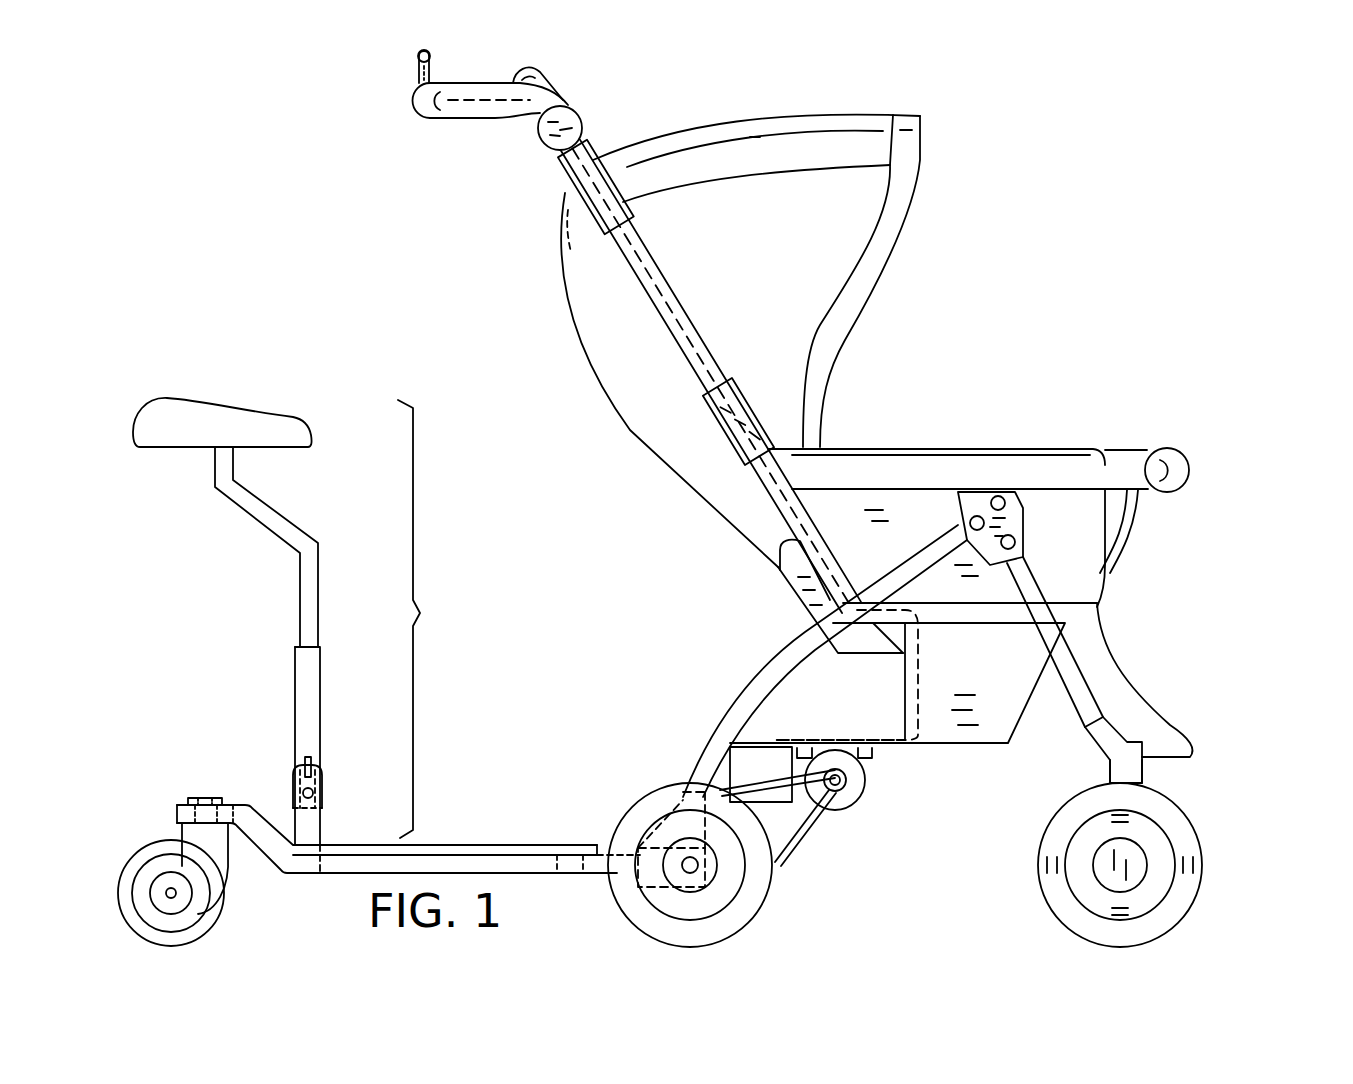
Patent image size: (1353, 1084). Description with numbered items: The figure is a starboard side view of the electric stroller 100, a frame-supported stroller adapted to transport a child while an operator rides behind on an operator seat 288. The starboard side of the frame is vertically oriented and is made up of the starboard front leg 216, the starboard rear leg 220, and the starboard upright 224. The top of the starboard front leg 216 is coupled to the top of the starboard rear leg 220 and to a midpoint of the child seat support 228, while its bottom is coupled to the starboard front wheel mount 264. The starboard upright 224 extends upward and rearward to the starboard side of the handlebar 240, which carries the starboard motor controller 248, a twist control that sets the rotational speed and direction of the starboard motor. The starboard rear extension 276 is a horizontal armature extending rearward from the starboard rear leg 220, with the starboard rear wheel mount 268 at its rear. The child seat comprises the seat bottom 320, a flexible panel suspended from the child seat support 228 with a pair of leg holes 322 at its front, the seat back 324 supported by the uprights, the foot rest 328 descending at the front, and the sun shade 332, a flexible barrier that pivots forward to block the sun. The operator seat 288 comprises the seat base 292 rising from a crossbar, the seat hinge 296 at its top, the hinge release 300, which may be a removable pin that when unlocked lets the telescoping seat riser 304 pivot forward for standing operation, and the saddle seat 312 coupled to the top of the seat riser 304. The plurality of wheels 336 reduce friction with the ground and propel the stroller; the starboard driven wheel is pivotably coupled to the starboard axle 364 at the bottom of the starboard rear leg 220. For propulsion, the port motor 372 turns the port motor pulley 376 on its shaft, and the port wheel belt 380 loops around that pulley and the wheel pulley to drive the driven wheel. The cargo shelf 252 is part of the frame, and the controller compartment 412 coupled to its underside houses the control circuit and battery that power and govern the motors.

The electric stroller 100 is at (1103, 225).
The starboard front leg 216 is at (1062, 670).
The starboard rear leg 220 is at (752, 690).
The starboard upright 224 is at (670, 322).
The child seat support 228 is at (1125, 463).
The handlebar 240 is at (453, 118).
The starboard motor controller 248 is at (417, 77).
The cargo shelf 252 is at (803, 647).
The starboard front wheel mount 264 is at (1138, 772).
The starboard rear wheel mount 268 is at (180, 815).
The starboard rear extension 276 is at (544, 873).
The operator seat 288 is at (443, 619).
The seat base 292 is at (293, 803).
The seat hinge 296 is at (299, 770).
The hinge release 300 is at (312, 793).
The seat riser 304 is at (303, 612).
The saddle seat 312 is at (168, 415).
The seat bottom 320 is at (1067, 603).
The leg holes 322 is at (1113, 534).
The seat back 324 is at (645, 440).
The foot rest 328 is at (1173, 740).
The sun shade 332 is at (850, 130).
The plurality of wheels 336 is at (208, 932).
The starboard axle 364 is at (697, 870).
The port motor 372 is at (865, 768).
The port motor pulley 376 is at (845, 790).
The port wheel belt 380 is at (800, 835).
The controller compartment 412 is at (680, 795).